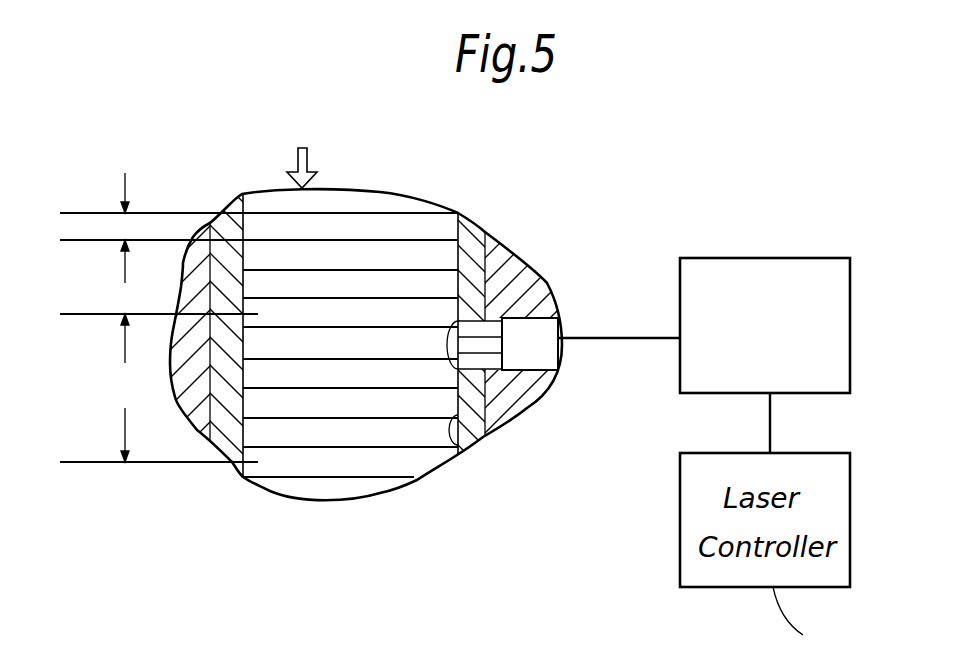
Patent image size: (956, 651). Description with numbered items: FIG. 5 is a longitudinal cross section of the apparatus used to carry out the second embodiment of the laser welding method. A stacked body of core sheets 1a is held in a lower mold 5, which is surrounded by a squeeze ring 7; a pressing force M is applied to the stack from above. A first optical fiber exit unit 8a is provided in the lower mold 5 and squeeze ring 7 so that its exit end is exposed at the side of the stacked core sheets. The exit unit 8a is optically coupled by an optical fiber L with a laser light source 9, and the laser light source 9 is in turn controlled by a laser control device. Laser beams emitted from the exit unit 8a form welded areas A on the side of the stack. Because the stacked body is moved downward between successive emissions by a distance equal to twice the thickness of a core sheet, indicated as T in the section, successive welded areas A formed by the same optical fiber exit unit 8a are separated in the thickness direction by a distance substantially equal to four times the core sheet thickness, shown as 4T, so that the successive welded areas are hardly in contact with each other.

The laminated disc stack (workpiece) 1a is at (320, 458).
The lower mold 5 is at (523, 270).
The squeeze ring 7 is at (470, 237).
The first optical fiber exit unit 8a is at (538, 365).
The welded area A is at (457, 453).
The optical fiber L is at (615, 336).
The applied pressing force M is at (313, 158).
The single disc thickness T is at (130, 227).
The four times the thickness of core sheets 4T is at (159, 388).
The laser light source 9 is at (770, 258).